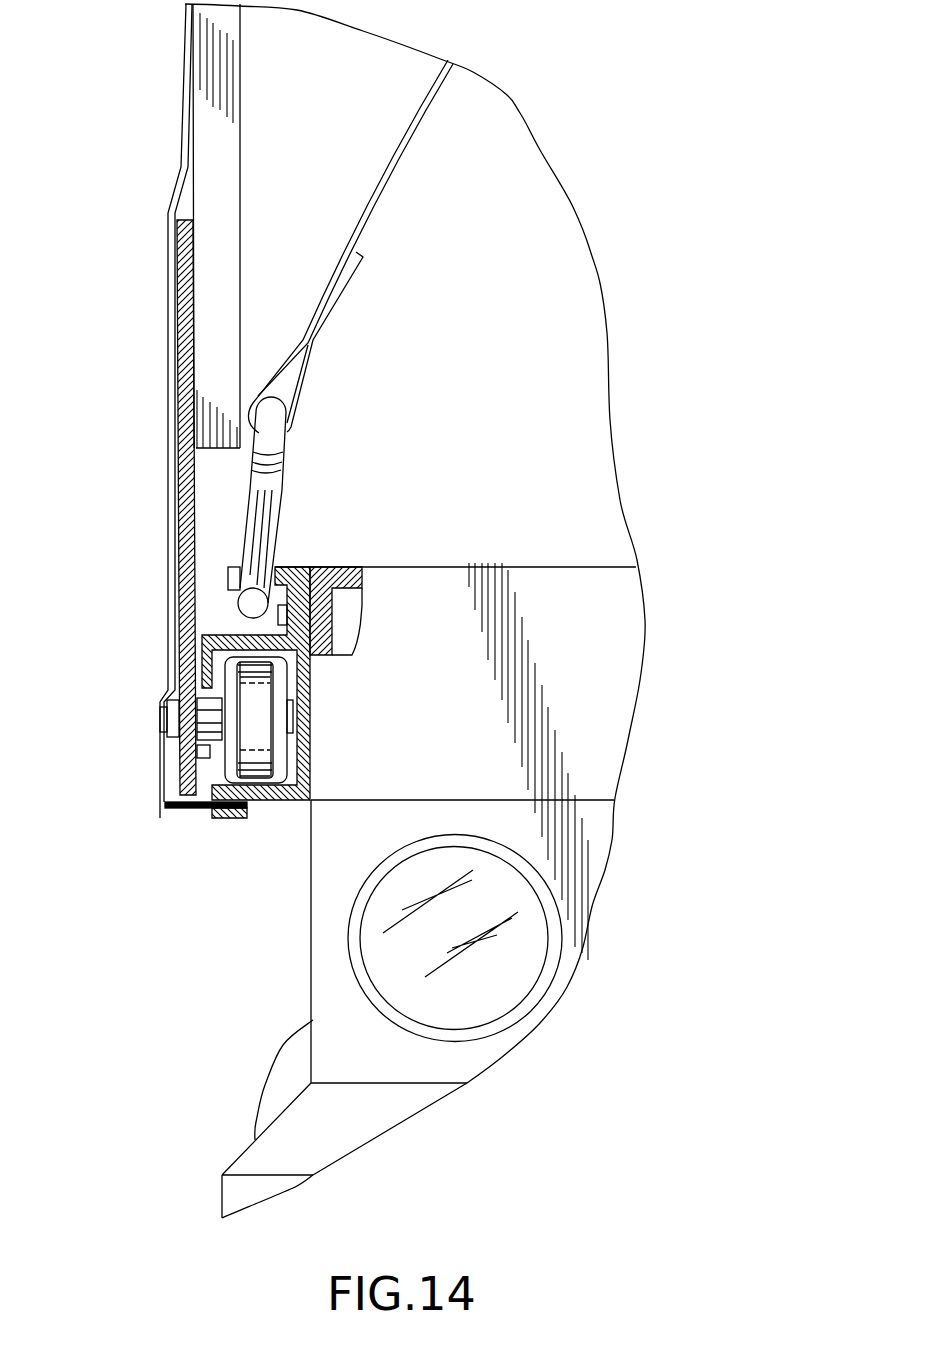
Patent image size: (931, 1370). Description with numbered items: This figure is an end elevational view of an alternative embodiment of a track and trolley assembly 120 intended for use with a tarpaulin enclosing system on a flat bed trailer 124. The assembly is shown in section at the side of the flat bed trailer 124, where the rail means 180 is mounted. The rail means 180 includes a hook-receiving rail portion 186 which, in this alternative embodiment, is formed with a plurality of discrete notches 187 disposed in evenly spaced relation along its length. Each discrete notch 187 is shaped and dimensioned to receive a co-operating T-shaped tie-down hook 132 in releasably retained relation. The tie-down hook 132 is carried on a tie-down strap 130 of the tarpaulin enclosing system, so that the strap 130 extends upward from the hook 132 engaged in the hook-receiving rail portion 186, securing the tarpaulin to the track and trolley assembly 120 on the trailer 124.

The track and trolley assembly 120 is at (125, 849).
The flat bed trailer 124 is at (595, 830).
The tie-down strap 130 is at (377, 198).
The tie-down hook 132 is at (270, 510).
The rail means 180 is at (287, 563).
The hook-receiving rail portion 186 is at (228, 578).
The discrete notch 187 is at (238, 565).